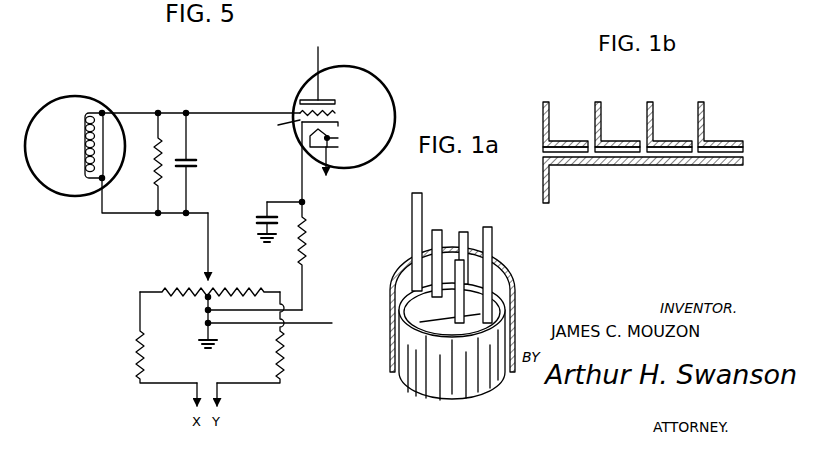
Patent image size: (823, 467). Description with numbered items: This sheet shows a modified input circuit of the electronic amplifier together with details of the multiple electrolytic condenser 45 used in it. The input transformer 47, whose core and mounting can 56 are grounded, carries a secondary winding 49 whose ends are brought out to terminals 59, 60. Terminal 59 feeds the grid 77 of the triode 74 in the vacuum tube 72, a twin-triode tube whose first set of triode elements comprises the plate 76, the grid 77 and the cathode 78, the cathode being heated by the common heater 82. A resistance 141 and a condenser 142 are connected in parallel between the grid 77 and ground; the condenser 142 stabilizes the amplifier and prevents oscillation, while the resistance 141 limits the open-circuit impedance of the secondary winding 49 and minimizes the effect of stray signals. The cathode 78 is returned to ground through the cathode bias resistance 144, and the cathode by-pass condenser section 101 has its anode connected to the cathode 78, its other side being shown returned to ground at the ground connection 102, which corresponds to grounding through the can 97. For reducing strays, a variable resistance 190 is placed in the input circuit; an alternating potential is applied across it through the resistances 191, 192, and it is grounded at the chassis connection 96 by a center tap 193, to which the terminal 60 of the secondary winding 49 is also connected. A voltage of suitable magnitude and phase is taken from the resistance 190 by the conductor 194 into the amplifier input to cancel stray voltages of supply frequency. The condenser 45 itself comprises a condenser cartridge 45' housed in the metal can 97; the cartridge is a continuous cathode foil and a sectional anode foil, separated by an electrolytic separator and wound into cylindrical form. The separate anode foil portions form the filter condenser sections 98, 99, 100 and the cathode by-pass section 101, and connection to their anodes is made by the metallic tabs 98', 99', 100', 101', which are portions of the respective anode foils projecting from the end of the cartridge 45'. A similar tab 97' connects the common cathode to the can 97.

In FIG. 5, the input transformer 47 is at (72, 88).
In FIG. 5, the mounting can 56 is at (62, 95).
In FIG. 5, the secondary winding 49 is at (94, 154).
In FIG. 5, the terminal 59 is at (103, 111).
In FIG. 5, the terminal 60 is at (103, 180).
In FIG. 5, the resistance 141 is at (155, 174).
In FIG. 5, the condenser 142 is at (197, 164).
In FIG. 5, the vacuum tube 72 is at (360, 70).
In FIG. 5, the triode 74 is at (280, 125).
In FIG. 5, the plate 76 is at (336, 103).
In FIG. 5, the grid 77 is at (336, 113).
In FIG. 5, the cathode 78 is at (338, 122).
In FIG. 5, the common heater 82 is at (338, 138).
In FIG. 5, the cathode by-pass condenser section 101 is at (253, 212).
In FIG. 1b, the cathode by-pass condenser section 101 is at (728, 173).
In FIG. 5, the ground 102 is at (258, 238).
In FIG. 5, the cathode bias resistance 144 is at (306, 236).
In FIG. 5, the conductor 194 is at (205, 245).
In FIG. 5, the variable resistance 190 is at (220, 290).
In FIG. 5, the center tap 193 is at (206, 299).
In FIG. 5, the resistance 191 is at (136, 350).
In FIG. 5, the resistance 192 is at (284, 352).
In FIG. 5, the chassis connection 96 is at (214, 341).
In FIG. 1a, the metal can 97 is at (433, 309).
In FIG. 1a, the multiple electrolytic condenser 45 is at (475, 323).
In FIG. 1a, the condenser cartridge 45' is at (441, 346).
In FIG. 1b, the condenser cartridge 45' is at (643, 113).
In FIG. 1a, the conductor 100' is at (403, 231).
In FIG. 1b, the conductor 100' is at (550, 112).
In FIG. 1a, the conductor 98' is at (434, 242).
In FIG. 1b, the conductor 98' is at (657, 112).
In FIG. 1a, the conductor 99' is at (453, 263).
In FIG. 1b, the conductor 99' is at (604, 112).
In FIG. 1a, the conductor 101' is at (476, 236).
In FIG. 1b, the conductor 101' is at (708, 112).
In FIG. 1a, the tab 97' is at (498, 259).
In FIG. 1b, the tab 97' is at (643, 183).
In FIG. 1b, the filter condenser section 100 is at (577, 173).
In FIG. 1b, the filter condenser section 99 is at (622, 173).
In FIG. 1b, the filter condenser section 98 is at (673, 173).